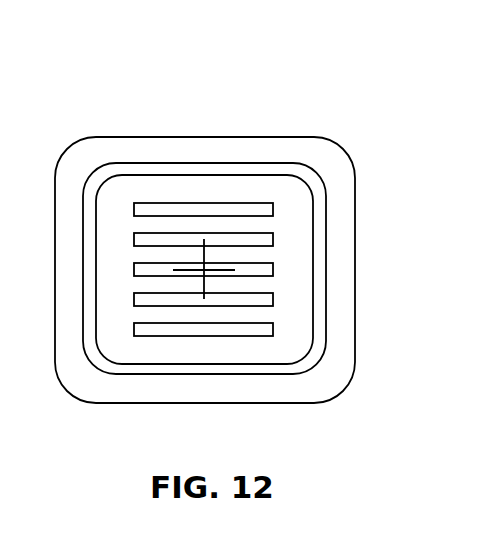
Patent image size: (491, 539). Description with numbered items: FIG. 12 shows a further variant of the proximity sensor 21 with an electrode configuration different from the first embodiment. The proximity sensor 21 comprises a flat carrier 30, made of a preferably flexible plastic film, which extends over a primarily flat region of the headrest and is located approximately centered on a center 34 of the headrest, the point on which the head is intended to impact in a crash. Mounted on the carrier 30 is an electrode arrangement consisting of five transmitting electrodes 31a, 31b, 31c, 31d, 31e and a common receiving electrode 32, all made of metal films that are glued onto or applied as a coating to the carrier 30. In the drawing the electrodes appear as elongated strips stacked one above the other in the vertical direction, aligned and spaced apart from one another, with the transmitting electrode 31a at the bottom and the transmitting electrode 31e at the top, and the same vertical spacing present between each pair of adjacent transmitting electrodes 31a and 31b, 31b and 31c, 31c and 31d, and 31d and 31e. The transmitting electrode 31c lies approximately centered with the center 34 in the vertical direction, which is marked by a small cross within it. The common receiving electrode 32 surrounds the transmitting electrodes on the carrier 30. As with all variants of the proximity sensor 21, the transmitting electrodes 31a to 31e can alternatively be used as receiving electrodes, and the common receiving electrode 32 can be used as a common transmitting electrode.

The proximity sensor 21 is at (102, 101).
The carrier 30 is at (73, 147).
The common receiving electrode 32 is at (307, 177).
The transmitting electrode 31a is at (245, 330).
The transmitting electrode 31b is at (268, 300).
The transmitting electrode 31c is at (268, 268).
The transmitting electrode 31d is at (245, 237).
The transmitting electrode 31e is at (157, 205).
The center 34 is at (205, 270).